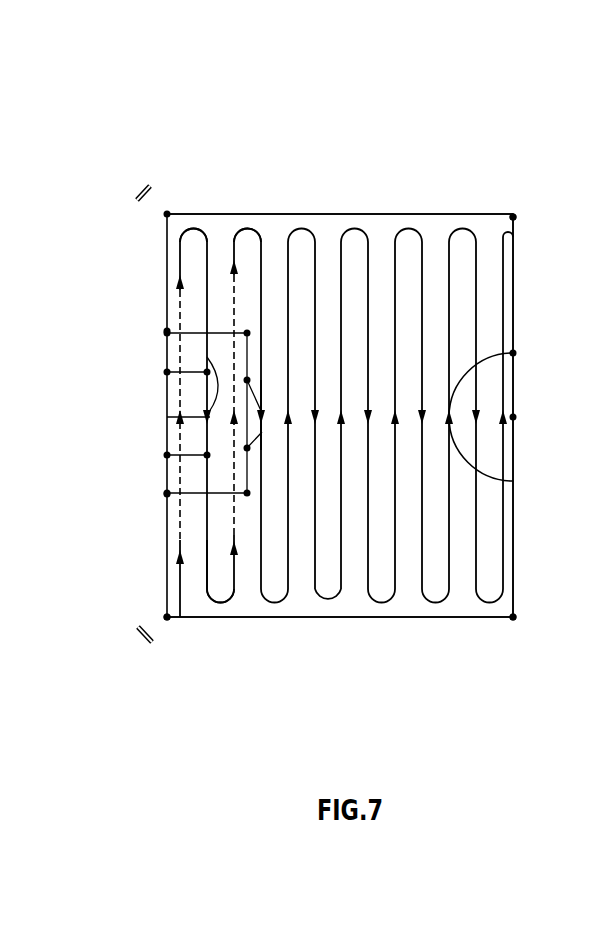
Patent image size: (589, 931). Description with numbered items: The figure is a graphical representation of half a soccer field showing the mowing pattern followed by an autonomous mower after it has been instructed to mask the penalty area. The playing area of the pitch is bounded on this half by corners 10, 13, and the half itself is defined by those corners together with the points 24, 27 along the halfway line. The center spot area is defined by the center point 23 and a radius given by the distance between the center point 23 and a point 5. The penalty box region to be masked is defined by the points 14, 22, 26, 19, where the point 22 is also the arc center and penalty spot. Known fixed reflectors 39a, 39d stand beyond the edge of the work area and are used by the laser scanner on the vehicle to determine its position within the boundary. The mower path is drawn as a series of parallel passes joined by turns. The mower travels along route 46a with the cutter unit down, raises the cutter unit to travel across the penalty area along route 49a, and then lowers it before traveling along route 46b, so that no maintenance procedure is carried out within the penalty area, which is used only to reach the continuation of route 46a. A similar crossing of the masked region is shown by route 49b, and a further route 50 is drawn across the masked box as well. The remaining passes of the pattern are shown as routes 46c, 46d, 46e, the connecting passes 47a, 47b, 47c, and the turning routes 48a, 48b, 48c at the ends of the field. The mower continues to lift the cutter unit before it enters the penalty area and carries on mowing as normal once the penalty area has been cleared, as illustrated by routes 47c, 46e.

The point 5 is at (513, 353).
The corner 10 is at (167, 214).
The corner 13 is at (167, 617).
The penalty box region point 14 is at (167, 331).
The penalty box region point 19 is at (167, 494).
The arc center and penalty spot 22 is at (247, 333).
The center point 23 is at (513, 417).
The pitch half point 24 is at (513, 218).
The penalty box region point 26 is at (247, 493).
The pitch half point 27 is at (513, 617).
The fixed reflector 39a is at (133, 192).
The fixed reflector 39d is at (133, 631).
The route 46a is at (178, 555).
The route 46b is at (178, 278).
The route 46c is at (236, 548).
The route 46d is at (234, 290).
The route 46e is at (265, 415).
The route 47a is at (208, 292).
The route 47b is at (205, 545).
The route 47c is at (263, 412).
The route 48a is at (195, 230).
The route 48b is at (222, 600).
The route 48c is at (237, 240).
The route 49a is at (167, 372).
The route 49b is at (234, 470).
The route 50 is at (167, 417).